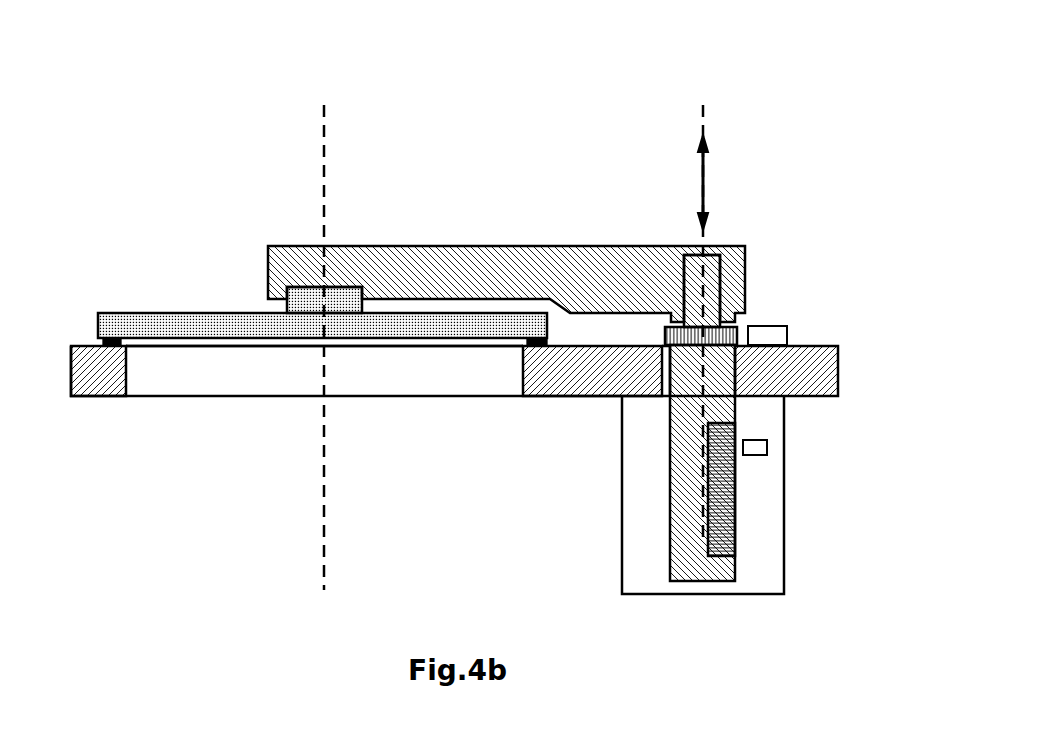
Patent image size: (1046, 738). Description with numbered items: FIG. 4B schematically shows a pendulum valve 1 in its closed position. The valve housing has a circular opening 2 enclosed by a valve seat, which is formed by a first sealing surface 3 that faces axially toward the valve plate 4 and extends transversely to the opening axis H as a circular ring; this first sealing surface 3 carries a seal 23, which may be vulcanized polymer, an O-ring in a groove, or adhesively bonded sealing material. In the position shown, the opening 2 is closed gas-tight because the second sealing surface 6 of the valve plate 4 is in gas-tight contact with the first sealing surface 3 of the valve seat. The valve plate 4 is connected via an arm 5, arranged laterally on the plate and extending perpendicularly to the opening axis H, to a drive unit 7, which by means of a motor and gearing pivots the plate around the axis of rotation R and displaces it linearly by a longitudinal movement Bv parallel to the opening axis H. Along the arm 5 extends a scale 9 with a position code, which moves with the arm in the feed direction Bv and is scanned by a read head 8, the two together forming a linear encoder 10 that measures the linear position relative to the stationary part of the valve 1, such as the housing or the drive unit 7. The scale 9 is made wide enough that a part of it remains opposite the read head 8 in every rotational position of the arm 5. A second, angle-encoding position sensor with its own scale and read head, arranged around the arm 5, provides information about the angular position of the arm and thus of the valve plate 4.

The pendulum valve 1 is at (230, 88).
The opening 2 is at (135, 390).
The first sealing surface 3 is at (104, 358).
The valve plate 4 is at (133, 322).
The arm 5 is at (678, 489).
The second sealing surface 6 is at (88, 337).
The drive unit 7 is at (622, 582).
The read head 8 is at (750, 448).
The scale 9 is at (723, 542).
The linear encoder 10 is at (772, 532).
The seal 23 is at (520, 346).
The opening axis H is at (323, 154).
The axis of rotation R is at (703, 108).
The longitudinal movement Bv is at (703, 193).